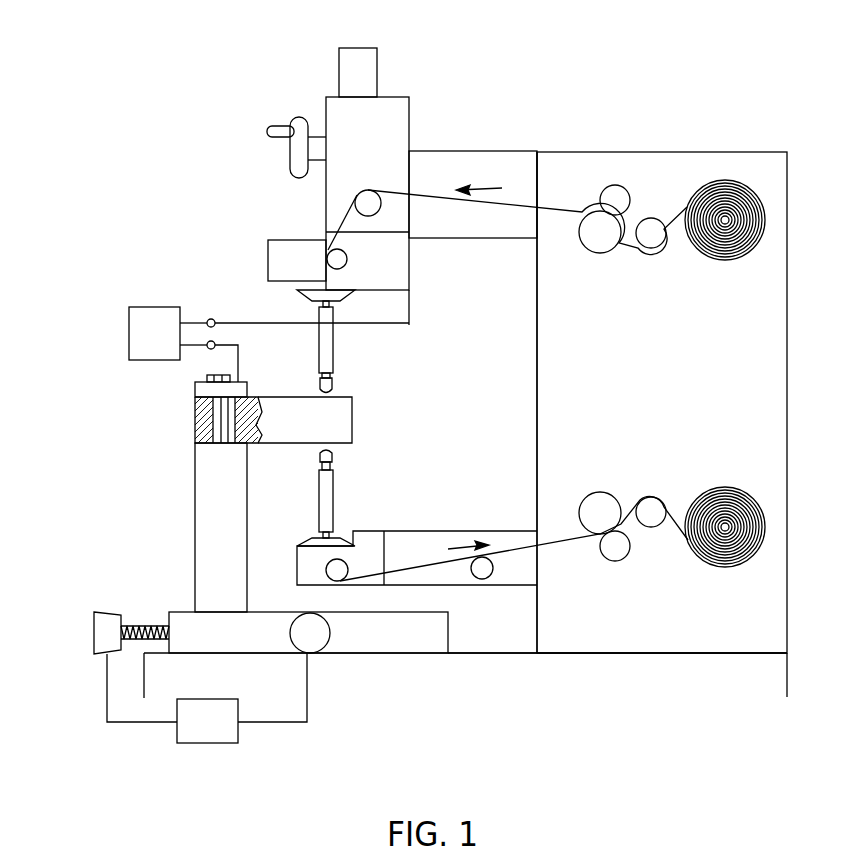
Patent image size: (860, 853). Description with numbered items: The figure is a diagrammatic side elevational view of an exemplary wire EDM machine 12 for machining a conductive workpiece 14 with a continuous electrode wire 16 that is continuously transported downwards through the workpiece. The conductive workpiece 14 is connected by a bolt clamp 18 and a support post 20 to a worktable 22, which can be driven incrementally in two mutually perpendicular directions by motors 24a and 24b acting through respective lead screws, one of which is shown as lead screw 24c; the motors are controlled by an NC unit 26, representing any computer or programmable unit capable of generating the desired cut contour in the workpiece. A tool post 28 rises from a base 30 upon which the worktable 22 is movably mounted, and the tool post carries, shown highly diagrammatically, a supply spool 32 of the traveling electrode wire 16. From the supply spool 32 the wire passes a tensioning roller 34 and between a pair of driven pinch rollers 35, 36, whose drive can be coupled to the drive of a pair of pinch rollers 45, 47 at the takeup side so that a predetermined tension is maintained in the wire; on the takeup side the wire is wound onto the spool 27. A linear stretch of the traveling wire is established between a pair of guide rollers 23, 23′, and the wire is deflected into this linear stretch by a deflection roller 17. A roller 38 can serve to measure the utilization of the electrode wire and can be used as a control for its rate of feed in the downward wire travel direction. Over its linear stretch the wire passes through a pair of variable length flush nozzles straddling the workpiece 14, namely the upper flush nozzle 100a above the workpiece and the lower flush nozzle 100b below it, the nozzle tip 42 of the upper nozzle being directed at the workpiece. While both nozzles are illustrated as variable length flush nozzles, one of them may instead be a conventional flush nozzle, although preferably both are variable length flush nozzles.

The wire EDM machine 12 is at (703, 65).
The conductive workpiece 14 is at (346, 420).
The continuous electrode wire 16 is at (563, 206).
The deflection roller 17 is at (371, 190).
The bolt clamp 18 is at (196, 392).
The support post 20 is at (155, 306).
The worktable 22 is at (380, 655).
The guide roller 23 is at (343, 566).
The guide roller 23′ is at (348, 260).
The motor 24a is at (97, 635).
The motor 24b is at (297, 646).
The lead screw 24c is at (143, 625).
The NC unit 26 is at (204, 745).
The take-up spool 27 is at (725, 568).
The tool post 28 is at (725, 654).
The base 30 is at (485, 655).
The supply spool 32 is at (725, 260).
The tensioning roller 34 is at (651, 248).
The driven pinch roller 35 is at (600, 252).
The driven pinch roller 36 is at (628, 194).
The roller 38 is at (651, 528).
The nozzle tip 42 is at (340, 393).
The pinch roller 45 is at (600, 494).
The pinch roller 47 is at (615, 561).
The upper flush nozzle 100a is at (334, 345).
The lower flush nozzle 100b is at (334, 495).